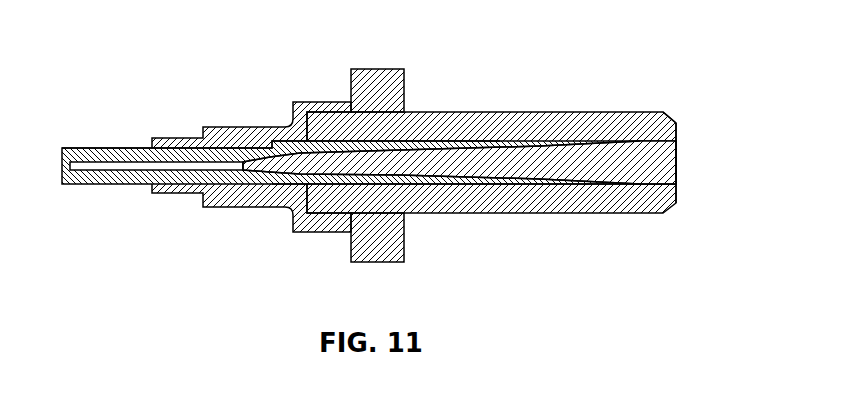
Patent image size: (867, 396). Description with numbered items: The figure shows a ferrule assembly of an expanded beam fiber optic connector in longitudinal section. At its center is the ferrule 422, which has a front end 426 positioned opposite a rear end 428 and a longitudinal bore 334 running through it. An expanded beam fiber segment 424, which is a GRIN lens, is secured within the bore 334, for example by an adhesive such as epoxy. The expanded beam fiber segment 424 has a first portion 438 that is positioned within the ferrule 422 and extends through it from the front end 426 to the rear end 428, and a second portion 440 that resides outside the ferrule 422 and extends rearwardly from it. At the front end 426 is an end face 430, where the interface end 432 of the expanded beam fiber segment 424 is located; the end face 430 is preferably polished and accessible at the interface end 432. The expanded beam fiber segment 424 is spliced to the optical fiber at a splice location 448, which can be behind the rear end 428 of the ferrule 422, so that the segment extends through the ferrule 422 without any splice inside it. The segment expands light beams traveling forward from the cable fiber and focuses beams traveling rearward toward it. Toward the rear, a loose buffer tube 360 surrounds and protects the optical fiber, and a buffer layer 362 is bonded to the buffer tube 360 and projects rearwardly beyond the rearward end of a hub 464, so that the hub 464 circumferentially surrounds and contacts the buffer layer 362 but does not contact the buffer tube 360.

The longitudinal bore 334 is at (476, 190).
The buffer tube 360 is at (369, 173).
The buffer layer 362 is at (118, 147).
The ferrule 422 is at (528, 108).
The expanded beam fiber segment 424 is at (560, 188).
The front end 426 is at (688, 183).
The rear end 428 is at (305, 100).
The end face 430 is at (679, 119).
The interface end 432 is at (679, 160).
The first portion 438 is at (553, 146).
The second portion 440 is at (264, 180).
The splice location 448 is at (243, 166).
The hub 464 is at (383, 58).